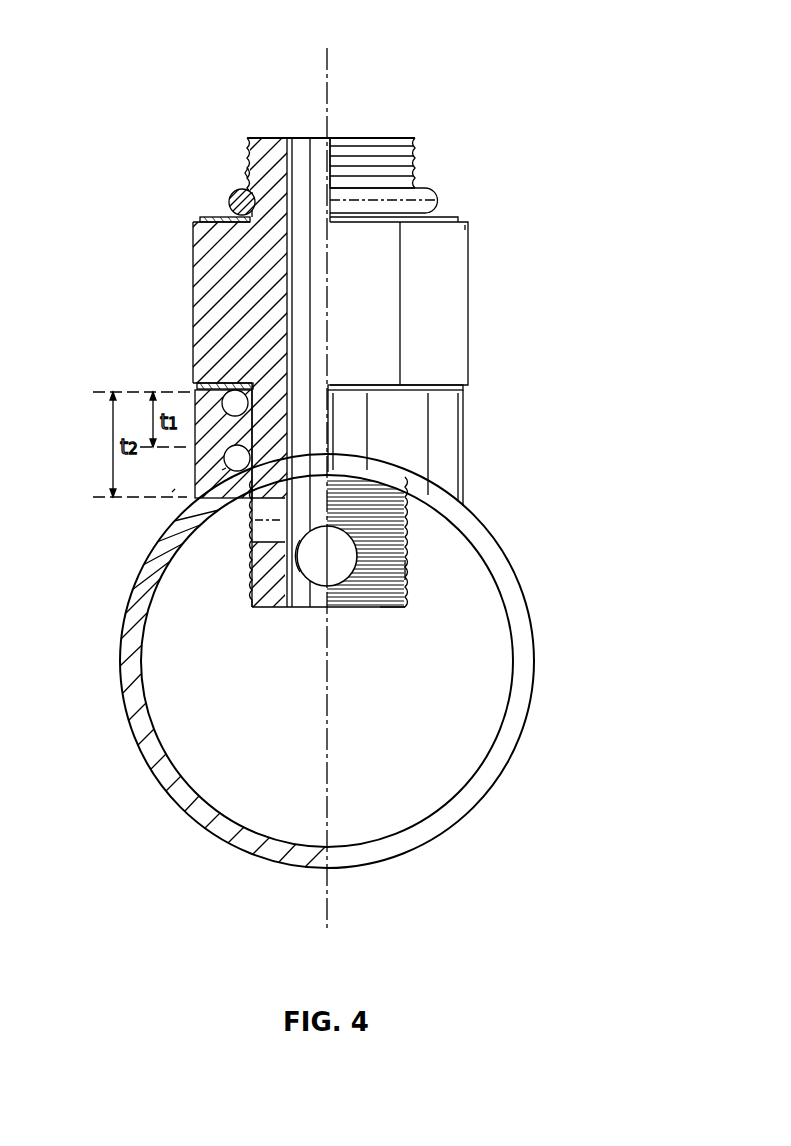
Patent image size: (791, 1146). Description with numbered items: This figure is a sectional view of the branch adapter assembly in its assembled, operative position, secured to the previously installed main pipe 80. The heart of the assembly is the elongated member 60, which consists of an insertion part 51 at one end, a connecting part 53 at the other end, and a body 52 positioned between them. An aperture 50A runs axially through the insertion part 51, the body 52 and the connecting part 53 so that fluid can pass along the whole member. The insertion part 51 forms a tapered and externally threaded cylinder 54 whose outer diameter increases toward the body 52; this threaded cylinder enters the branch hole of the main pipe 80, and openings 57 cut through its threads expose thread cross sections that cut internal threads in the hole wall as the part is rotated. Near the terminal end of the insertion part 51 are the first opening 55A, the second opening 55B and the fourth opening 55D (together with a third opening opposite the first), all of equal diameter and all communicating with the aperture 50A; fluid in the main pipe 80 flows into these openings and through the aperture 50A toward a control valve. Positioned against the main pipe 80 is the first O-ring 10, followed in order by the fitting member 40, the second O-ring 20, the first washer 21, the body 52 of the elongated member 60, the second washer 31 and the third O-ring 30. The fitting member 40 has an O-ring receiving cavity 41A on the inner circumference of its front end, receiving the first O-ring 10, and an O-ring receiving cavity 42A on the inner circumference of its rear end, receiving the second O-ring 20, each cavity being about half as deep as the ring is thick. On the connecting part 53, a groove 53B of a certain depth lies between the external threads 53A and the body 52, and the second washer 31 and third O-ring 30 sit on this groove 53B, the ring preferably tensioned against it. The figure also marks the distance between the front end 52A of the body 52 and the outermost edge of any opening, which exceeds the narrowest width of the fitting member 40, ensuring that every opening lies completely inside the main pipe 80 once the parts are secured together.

The first O-ring 10 is at (172, 492).
The second O-ring 20 is at (193, 350).
The first washer 21 is at (192, 375).
The third O-ring 30 is at (230, 198).
The second washer 31 is at (205, 221).
The fitting member 40 is at (461, 436).
The O-ring receiving cavity 41A is at (215, 470).
The O-ring receiving cavity 42A is at (215, 395).
The aperture 50A is at (297, 137).
The insertion part 51 is at (426, 573).
The body 52 is at (483, 295).
The front end of the body 52A is at (465, 391).
The connecting part 53 is at (388, 118).
The external threads 53A is at (249, 145).
The groove 53B is at (248, 180).
The tapered and externally threaded cylinder 54 is at (391, 606).
The first opening 55A is at (311, 571).
The second opening 55B is at (247, 530).
The fourth opening 55D is at (410, 537).
The openings 57 is at (343, 608).
The elongated member 60 is at (548, 266).
The main pipe 80 is at (531, 703).